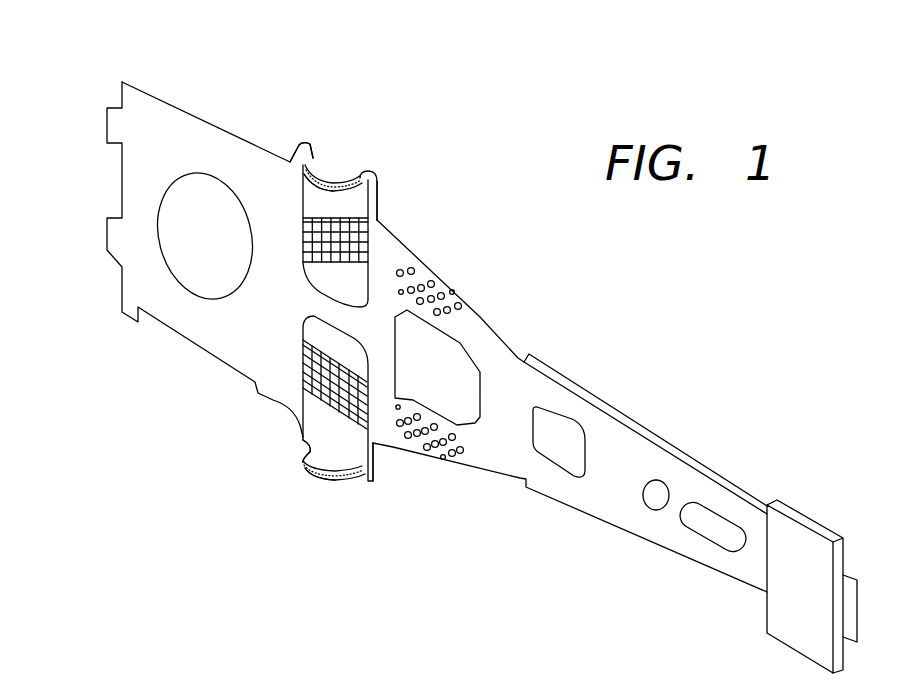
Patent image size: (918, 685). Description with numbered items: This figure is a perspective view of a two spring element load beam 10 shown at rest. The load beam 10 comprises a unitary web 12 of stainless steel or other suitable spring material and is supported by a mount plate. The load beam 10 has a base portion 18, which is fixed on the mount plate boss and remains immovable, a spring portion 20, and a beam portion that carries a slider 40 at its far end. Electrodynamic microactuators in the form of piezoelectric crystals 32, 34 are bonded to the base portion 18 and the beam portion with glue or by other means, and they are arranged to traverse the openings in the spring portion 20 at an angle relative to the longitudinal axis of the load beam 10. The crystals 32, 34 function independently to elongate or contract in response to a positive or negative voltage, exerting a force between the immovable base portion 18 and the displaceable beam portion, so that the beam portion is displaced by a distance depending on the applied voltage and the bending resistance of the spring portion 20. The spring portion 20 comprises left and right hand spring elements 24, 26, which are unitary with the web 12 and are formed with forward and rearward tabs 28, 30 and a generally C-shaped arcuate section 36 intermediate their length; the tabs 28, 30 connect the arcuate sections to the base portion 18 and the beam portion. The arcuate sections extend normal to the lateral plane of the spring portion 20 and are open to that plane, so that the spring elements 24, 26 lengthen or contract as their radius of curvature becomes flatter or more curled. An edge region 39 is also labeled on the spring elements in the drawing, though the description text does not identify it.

The module retention assembly 10 is at (703, 351).
The frame arm 12 is at (522, 378).
The mounting bracket plate 18 is at (143, 88).
The first connector housing 20 is at (368, 176).
The second connector housing 24 is at (338, 480).
The top end wall 26 is at (313, 165).
The side wall 28 is at (377, 178).
The flange 30 is at (300, 143).
The second contact grid 32 is at (311, 380).
The first contact grid 34 is at (346, 250).
The bottom end wall 36 is at (300, 470).
The textured edge 39 is at (341, 178).
The end plate 40 is at (810, 574).